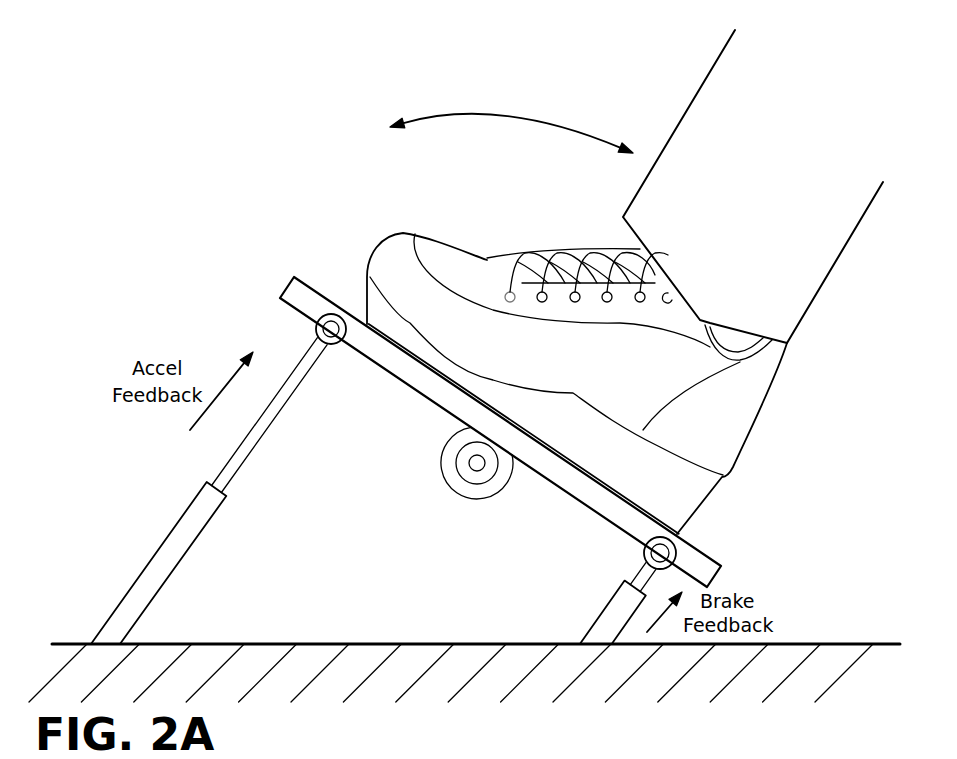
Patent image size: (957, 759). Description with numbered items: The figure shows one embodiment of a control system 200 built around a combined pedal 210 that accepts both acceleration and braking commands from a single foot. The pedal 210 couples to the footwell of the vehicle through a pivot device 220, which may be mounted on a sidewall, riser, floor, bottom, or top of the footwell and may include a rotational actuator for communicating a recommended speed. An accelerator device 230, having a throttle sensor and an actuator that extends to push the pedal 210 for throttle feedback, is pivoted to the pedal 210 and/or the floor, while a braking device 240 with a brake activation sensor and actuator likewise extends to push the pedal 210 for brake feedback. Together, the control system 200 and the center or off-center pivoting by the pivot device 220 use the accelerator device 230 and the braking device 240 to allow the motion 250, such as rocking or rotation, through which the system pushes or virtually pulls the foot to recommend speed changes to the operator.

The control system 200 is at (212, 86).
The pedal 210 is at (290, 283).
The pivot device 220 is at (470, 478).
The accelerator device 230 is at (158, 542).
The braking device 240 is at (627, 595).
The motion 250 is at (495, 117).